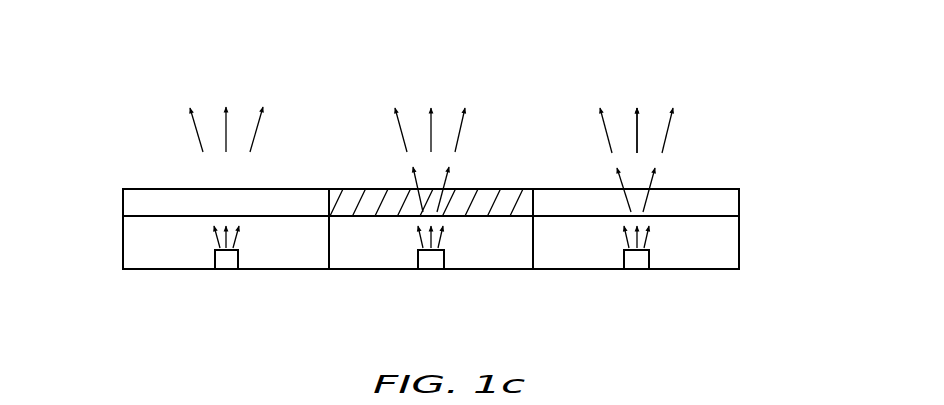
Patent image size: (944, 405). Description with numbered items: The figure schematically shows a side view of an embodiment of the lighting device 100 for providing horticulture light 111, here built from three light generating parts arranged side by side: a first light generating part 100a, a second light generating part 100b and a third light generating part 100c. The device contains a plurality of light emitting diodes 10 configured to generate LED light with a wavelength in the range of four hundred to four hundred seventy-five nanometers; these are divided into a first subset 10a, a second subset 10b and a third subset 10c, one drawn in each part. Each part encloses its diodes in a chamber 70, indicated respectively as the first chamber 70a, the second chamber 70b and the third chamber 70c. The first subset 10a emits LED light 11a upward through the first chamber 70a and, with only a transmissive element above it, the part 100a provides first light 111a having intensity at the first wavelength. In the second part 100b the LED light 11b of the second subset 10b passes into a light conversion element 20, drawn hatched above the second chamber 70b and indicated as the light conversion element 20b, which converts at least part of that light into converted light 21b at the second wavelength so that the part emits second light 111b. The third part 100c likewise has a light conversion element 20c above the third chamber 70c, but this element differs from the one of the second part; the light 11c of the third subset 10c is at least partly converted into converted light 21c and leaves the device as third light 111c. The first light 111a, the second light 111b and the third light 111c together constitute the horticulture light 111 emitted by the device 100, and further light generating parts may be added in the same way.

The lighting device 100 is at (790, 140).
The first light generating part 100a is at (165, 100).
The second light generating part 100b is at (367, 112).
The third light generating part 100c is at (580, 118).
The light emitting diodes 10 is at (207, 261).
The first subset of light emitting diodes 10a is at (246, 261).
The second subset of light emitting diodes 10b is at (449, 261).
The third subset of light emitting diodes 10c is at (656, 257).
The LED light of the first subset 11a is at (209, 238).
The LED light of the second subset 11b is at (451, 240).
The LED light of the third subset 11c is at (656, 235).
The light conversion element 20 is at (583, 185).
The light conversion element of the second light generating part 20b is at (513, 187).
The light conversion element of the third light generating part 20c is at (733, 200).
The converted light of the second light generating part 21b is at (417, 187).
The converted light of the third light generating part 21c is at (653, 183).
The light chamber 70 is at (718, 262).
The first chamber 70a is at (132, 237).
The second chamber 70b is at (488, 262).
The third chamber 70c is at (733, 230).
The horticulture light 111 is at (689, 93).
The first light 111a is at (182, 142).
The second light 111b is at (389, 130).
The third light 111c is at (676, 132).